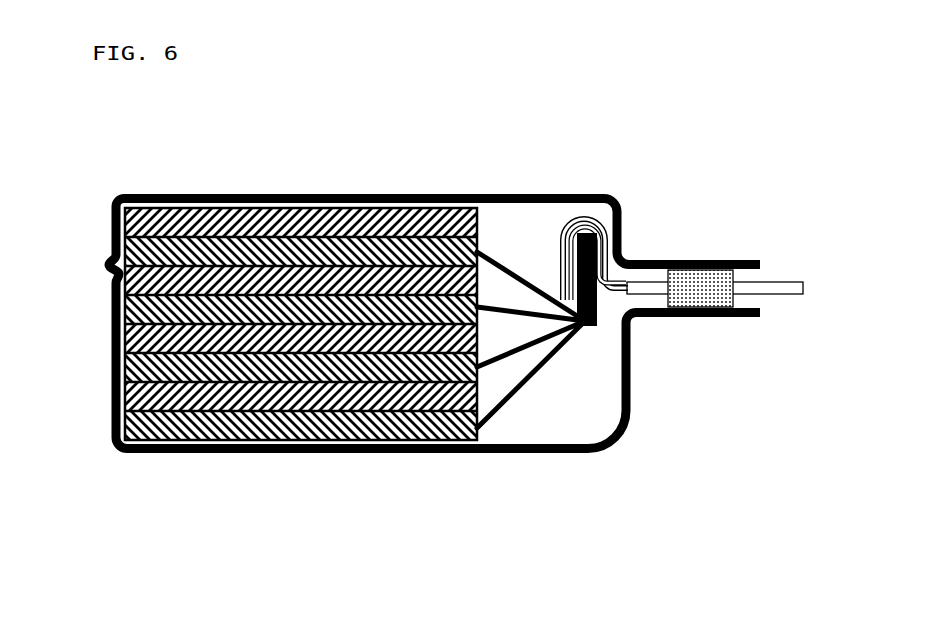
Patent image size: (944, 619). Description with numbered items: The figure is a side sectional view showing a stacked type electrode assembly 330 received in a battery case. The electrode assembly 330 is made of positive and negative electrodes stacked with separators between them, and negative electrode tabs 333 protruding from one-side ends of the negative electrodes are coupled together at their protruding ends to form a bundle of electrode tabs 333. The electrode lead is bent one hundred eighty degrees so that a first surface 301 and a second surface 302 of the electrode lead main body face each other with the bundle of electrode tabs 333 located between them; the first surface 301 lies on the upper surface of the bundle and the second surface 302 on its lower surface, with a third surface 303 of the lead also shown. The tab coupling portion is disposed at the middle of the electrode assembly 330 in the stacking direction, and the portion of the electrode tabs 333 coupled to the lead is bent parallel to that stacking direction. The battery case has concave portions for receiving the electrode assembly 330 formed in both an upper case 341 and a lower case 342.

The first surface 301 is at (550, 231).
The second surface 302 is at (618, 242).
The third surface 303 is at (782, 280).
The electrode assembly 330 is at (118, 328).
The negative electrode tabs 333 is at (517, 407).
The upper case 341 is at (337, 195).
The lower case 342 is at (292, 455).